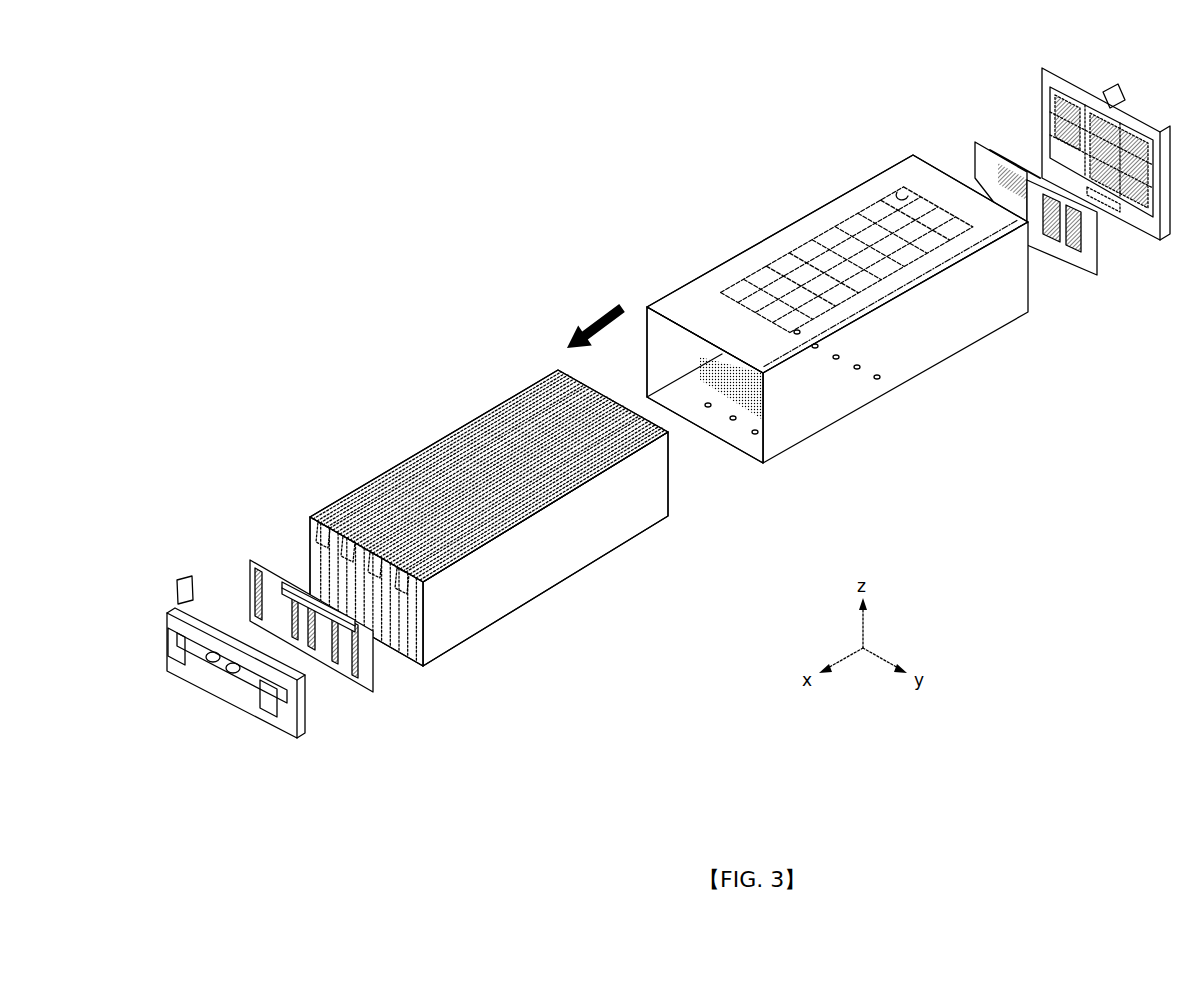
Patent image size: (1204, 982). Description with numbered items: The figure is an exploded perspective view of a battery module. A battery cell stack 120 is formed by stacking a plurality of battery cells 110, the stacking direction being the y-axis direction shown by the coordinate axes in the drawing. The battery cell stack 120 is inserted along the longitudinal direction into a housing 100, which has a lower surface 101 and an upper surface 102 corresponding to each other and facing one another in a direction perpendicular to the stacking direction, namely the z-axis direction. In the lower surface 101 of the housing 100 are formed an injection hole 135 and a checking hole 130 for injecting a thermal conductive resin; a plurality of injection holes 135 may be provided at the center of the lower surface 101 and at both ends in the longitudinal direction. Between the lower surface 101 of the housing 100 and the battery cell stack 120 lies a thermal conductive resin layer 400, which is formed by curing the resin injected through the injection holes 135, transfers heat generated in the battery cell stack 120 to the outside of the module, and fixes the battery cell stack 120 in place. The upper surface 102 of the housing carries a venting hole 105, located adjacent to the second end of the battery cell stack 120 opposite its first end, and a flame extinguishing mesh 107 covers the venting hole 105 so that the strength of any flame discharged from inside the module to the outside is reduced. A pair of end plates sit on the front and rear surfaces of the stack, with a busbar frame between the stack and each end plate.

The housing 100 is at (837, 336).
The lower surface 101 is at (750, 442).
The upper surface 102 is at (743, 267).
The venting hole 105 is at (903, 190).
The flame extinguishing mesh 107 is at (808, 258).
The battery cells 110 is at (486, 518).
The battery cell stack 120 is at (388, 482).
The checking hole 130 is at (730, 425).
The injection hole 135 is at (873, 378).
The thermal conductive resin layer 400 is at (690, 358).